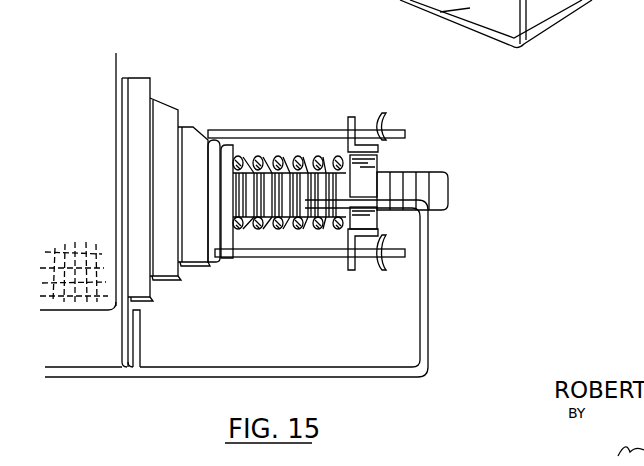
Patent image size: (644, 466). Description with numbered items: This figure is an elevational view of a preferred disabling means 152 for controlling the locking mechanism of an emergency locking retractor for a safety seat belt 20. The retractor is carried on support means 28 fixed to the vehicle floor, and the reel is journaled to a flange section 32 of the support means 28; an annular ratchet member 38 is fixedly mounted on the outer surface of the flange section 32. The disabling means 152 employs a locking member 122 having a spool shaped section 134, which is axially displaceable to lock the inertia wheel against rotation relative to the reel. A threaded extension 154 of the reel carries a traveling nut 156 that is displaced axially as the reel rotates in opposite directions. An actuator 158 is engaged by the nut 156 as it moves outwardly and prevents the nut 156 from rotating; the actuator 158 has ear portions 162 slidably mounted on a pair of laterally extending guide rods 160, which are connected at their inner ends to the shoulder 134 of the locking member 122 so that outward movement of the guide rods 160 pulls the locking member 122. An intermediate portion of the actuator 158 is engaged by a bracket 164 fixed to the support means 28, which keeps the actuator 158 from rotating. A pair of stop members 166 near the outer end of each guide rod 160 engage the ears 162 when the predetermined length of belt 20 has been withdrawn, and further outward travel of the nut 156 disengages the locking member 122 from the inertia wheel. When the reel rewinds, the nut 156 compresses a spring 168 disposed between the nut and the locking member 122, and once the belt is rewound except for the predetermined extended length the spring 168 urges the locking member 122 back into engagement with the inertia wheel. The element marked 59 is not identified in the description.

The safety seat belt 20 is at (90, 300).
The support means 28 is at (70, 378).
The flange section 32 is at (122, 78).
The annular ratchet member 38 is at (135, 78).
The block 59 is at (154, 108).
The locking member 122 is at (182, 127).
The spool shaped section 134 is at (211, 139).
The disabling means 152 is at (462, 124).
The threaded extension 154 is at (434, 184).
The traveling nut 156 is at (368, 230).
The actuator 158 is at (377, 164).
The guide rods 160 is at (268, 130).
The ear portions 162 is at (353, 117).
The bracket 164 is at (428, 328).
The stop members 166 is at (385, 116).
The spring 168 is at (260, 227).